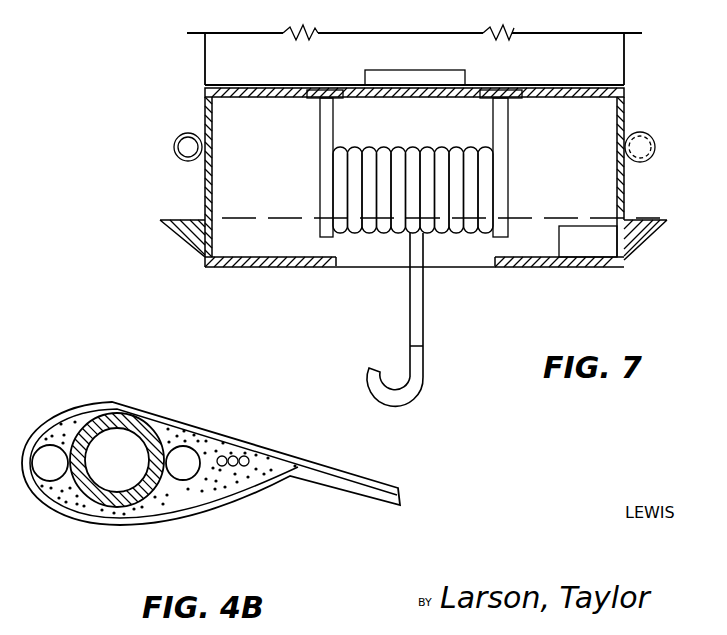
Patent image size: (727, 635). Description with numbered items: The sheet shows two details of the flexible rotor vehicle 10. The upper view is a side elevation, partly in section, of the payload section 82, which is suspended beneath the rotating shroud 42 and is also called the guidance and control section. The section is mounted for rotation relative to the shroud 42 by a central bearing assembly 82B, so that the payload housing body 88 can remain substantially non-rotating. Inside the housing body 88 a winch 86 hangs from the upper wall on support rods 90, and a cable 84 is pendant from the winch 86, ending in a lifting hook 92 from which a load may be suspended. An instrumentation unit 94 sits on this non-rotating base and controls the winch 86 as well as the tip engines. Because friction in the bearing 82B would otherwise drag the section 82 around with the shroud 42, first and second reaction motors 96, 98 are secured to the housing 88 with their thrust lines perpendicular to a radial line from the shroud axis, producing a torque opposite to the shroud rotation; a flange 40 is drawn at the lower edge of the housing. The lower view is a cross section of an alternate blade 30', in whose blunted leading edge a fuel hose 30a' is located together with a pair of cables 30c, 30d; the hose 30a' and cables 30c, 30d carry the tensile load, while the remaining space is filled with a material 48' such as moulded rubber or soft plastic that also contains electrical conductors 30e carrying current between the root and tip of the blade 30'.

In FIG. 7, the vehicle 10 is at (648, 103).
In FIG. 7, the flange 40 is at (636, 244).
In FIG. 7, the shroud 42 is at (610, 58).
In FIG. 7, the payload section 82 is at (399, 194).
In FIG. 7, the central bearing assembly 82B is at (452, 75).
In FIG. 7, the cable 84 is at (424, 320).
In FIG. 7, the winch 86 is at (384, 160).
In FIG. 7, the payload housing body 88 is at (214, 132).
In FIG. 7, the support rods 90 is at (325, 133).
In FIG. 7, the hook 92 is at (413, 388).
In FIG. 7, the instrumentation unit 94 is at (588, 246).
In FIG. 7, the first reaction motor 96 is at (182, 160).
In FIG. 7, the second reaction motor 98 is at (648, 160).
In FIG. 4B, the blade 30' is at (211, 462).
In FIG. 4B, the fuel hose 30a' is at (117, 492).
In FIG. 4B, the cable 30c is at (48, 462).
In FIG. 4B, the cable 30d is at (177, 482).
In FIG. 4B, the electrical conductors 30e is at (251, 472).
In FIG. 4B, the filler material 48' is at (237, 509).